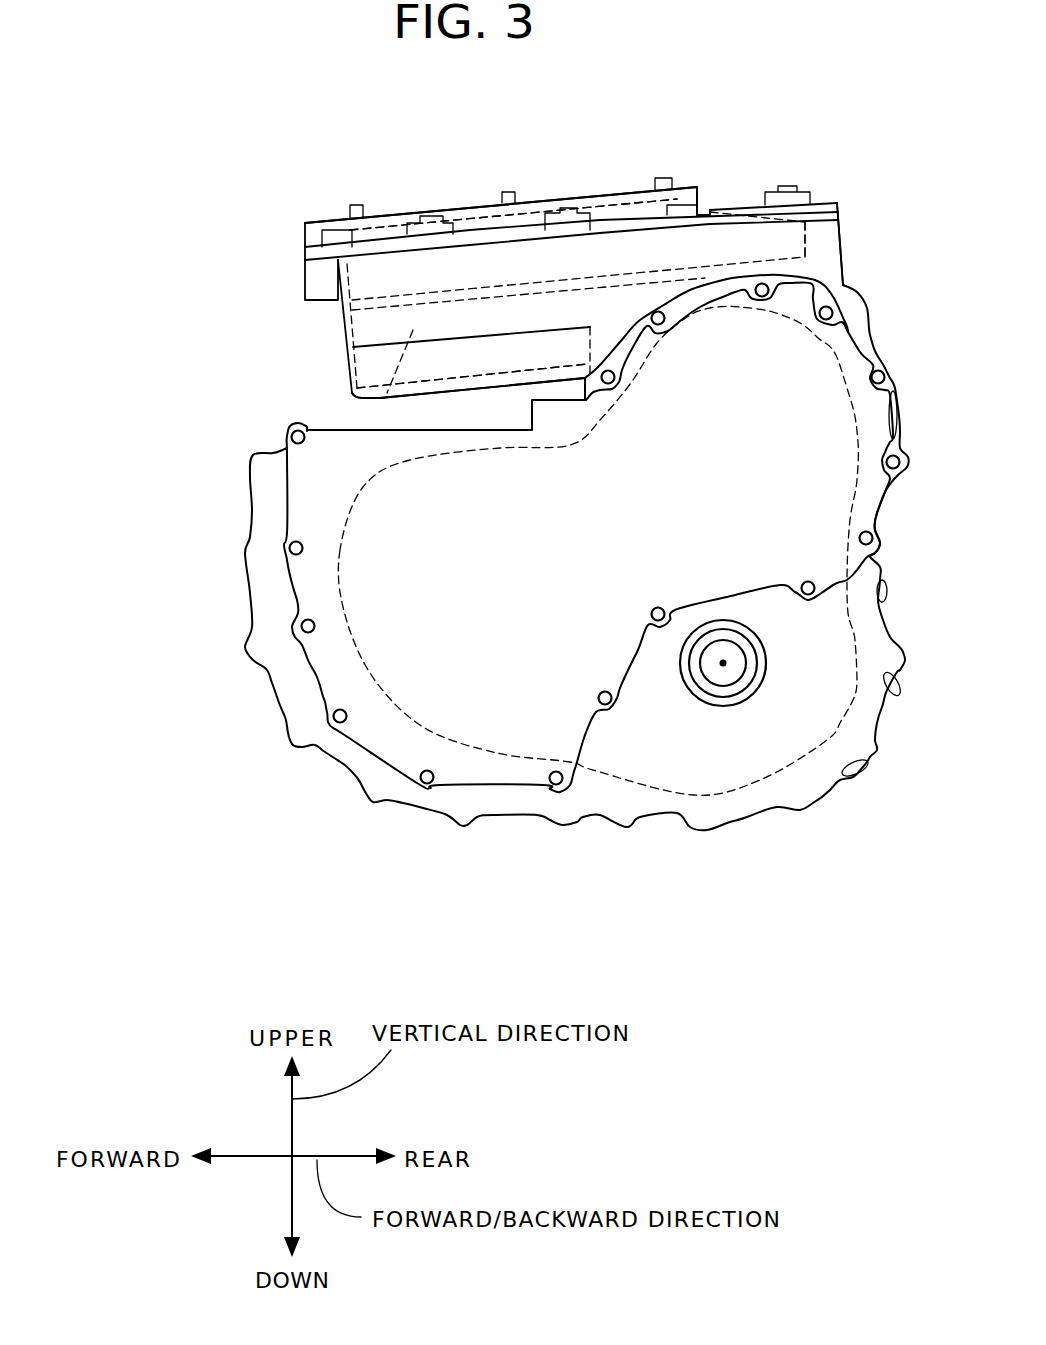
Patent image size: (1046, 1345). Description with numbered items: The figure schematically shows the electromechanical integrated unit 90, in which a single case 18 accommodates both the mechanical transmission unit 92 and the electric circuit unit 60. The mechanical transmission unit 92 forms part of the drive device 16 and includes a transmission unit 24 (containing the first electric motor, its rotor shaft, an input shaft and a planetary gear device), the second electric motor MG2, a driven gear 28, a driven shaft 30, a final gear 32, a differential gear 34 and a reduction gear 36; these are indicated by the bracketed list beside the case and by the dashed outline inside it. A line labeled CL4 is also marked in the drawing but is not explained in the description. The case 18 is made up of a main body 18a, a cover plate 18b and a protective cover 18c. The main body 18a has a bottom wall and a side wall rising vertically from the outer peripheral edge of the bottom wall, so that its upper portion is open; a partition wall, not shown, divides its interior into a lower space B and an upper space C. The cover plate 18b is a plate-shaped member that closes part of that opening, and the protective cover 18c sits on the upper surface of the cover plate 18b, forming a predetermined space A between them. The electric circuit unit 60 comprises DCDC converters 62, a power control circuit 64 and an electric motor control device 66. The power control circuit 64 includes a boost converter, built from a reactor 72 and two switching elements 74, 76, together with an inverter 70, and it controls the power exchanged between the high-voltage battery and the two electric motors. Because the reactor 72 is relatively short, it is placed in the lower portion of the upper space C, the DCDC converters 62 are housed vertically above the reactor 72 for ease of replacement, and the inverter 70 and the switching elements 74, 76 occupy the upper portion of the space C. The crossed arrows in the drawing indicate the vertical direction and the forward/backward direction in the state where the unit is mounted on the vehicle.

The drive device 16 is at (323, 120).
The case 18 is at (493, 834).
The main body 18a is at (380, 786).
The cover plate 18b is at (817, 205).
The protective cover 18c is at (678, 181).
The electric circuit unit 60 is at (152, 143).
The DCDC converters 62 is at (378, 397).
The power control circuit 64 is at (213, 303).
The electric motor control device 66 is at (345, 221).
The inverter 70 is at (415, 267).
The reactor 72 is at (373, 378).
The switching element 74 is at (528, 294).
The switching element 76 is at (513, 214).
The electromechanical integrated unit 90 is at (63, 267).
The mechanical transmission unit 92 is at (152, 537).
The transmission unit 24 is at (407, 515).
The driven gear 28 is at (171, 608).
The driven shaft 30 is at (171, 655).
The final gear 32 is at (171, 703).
The differential gear 34 is at (171, 752).
The reduction gear 36 is at (171, 800).
The second electric motor MG2 is at (506, 585).
The space A is at (623, 208).
The space B is at (575, 725).
The space C is at (823, 253).
The fourth axis CL4 is at (723, 663).